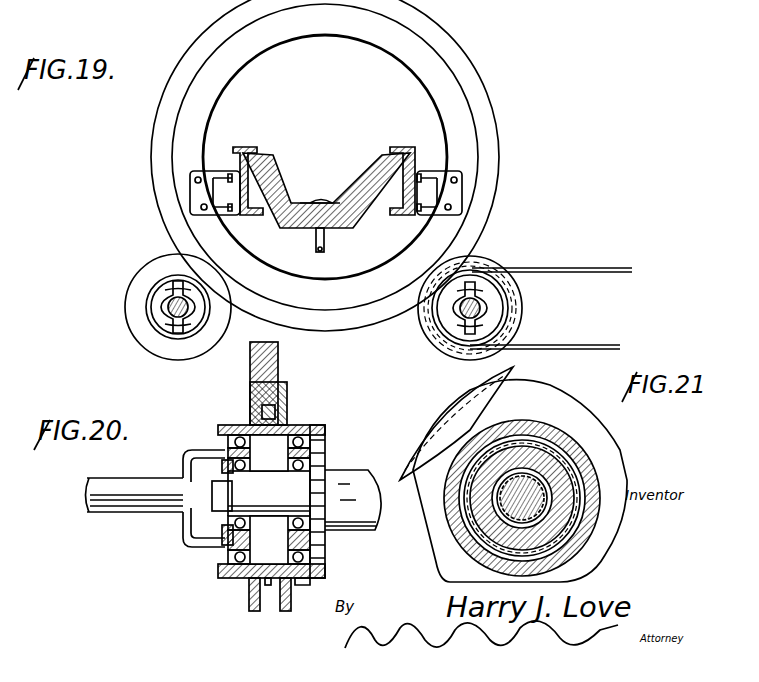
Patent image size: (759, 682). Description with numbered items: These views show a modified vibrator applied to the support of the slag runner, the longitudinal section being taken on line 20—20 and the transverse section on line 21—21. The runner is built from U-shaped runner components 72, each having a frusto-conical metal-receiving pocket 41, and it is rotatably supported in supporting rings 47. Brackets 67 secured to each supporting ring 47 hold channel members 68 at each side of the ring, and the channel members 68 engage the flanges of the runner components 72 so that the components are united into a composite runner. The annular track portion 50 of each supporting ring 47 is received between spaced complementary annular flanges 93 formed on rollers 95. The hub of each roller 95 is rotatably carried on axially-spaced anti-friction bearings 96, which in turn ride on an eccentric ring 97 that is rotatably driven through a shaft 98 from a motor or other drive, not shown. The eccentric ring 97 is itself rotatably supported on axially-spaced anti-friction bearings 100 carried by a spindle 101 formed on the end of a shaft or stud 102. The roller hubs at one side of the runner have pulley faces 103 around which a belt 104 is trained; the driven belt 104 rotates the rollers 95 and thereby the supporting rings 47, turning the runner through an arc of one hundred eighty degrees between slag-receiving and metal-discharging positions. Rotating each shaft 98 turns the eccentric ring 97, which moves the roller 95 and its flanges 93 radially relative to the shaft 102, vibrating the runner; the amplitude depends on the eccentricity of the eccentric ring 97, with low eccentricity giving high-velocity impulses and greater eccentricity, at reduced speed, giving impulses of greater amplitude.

In FIG. 19, the section line 20— 20 is at (178, 262).
In FIG. 20, the section line 21— 21 is at (262, 334).
In FIG. 19, the frusto-conical metal-receiving pocket 41 is at (312, 206).
In FIG. 19, the supporting ring 47 is at (436, 68).
In FIG. 20, the supporting ring 47 is at (279, 370).
In FIG. 19, the annular track portion 50 is at (195, 50).
In FIG. 20, the annular track portion 50 is at (252, 392).
In FIG. 21, the annular track portion 50 is at (510, 380).
In FIG. 19, the bracket 67 is at (200, 190).
In FIG. 19, the channel member 68 is at (250, 219).
In FIG. 19, the runner component 72 is at (366, 215).
In FIG. 19, the annular flange 93 is at (128, 314).
In FIG. 20, the annular flange 93 is at (288, 390).
In FIG. 21, the annular flange 93 is at (428, 542).
In FIG. 19, the roller 95 is at (120, 286).
In FIG. 20, the roller 95 is at (250, 396).
In FIG. 21, the roller 95 is at (545, 431).
In FIG. 20, the anti-friction bearing 96 is at (226, 434).
In FIG. 21, the anti-friction bearing 96 is at (556, 453).
In FIG. 19, the eccentric ring 97 is at (162, 318).
In FIG. 20, the eccentric ring 97 is at (238, 530).
In FIG. 21, the eccentric ring 97 is at (557, 472).
In FIG. 19, the shaft 98 is at (183, 300).
In FIG. 20, the shaft 98 is at (100, 506).
In FIG. 20, the anti-friction bearing 100 is at (298, 470).
In FIG. 20, the spindle 101 is at (243, 478).
In FIG. 21, the spindle 101 is at (535, 497).
In FIG. 20, the shaft or stud 102 is at (346, 494).
In FIG. 20, the pulley face 103 is at (326, 560).
In FIG. 19, the belt 104 is at (611, 266).
In FIG. 20, the belt 104 is at (306, 586).